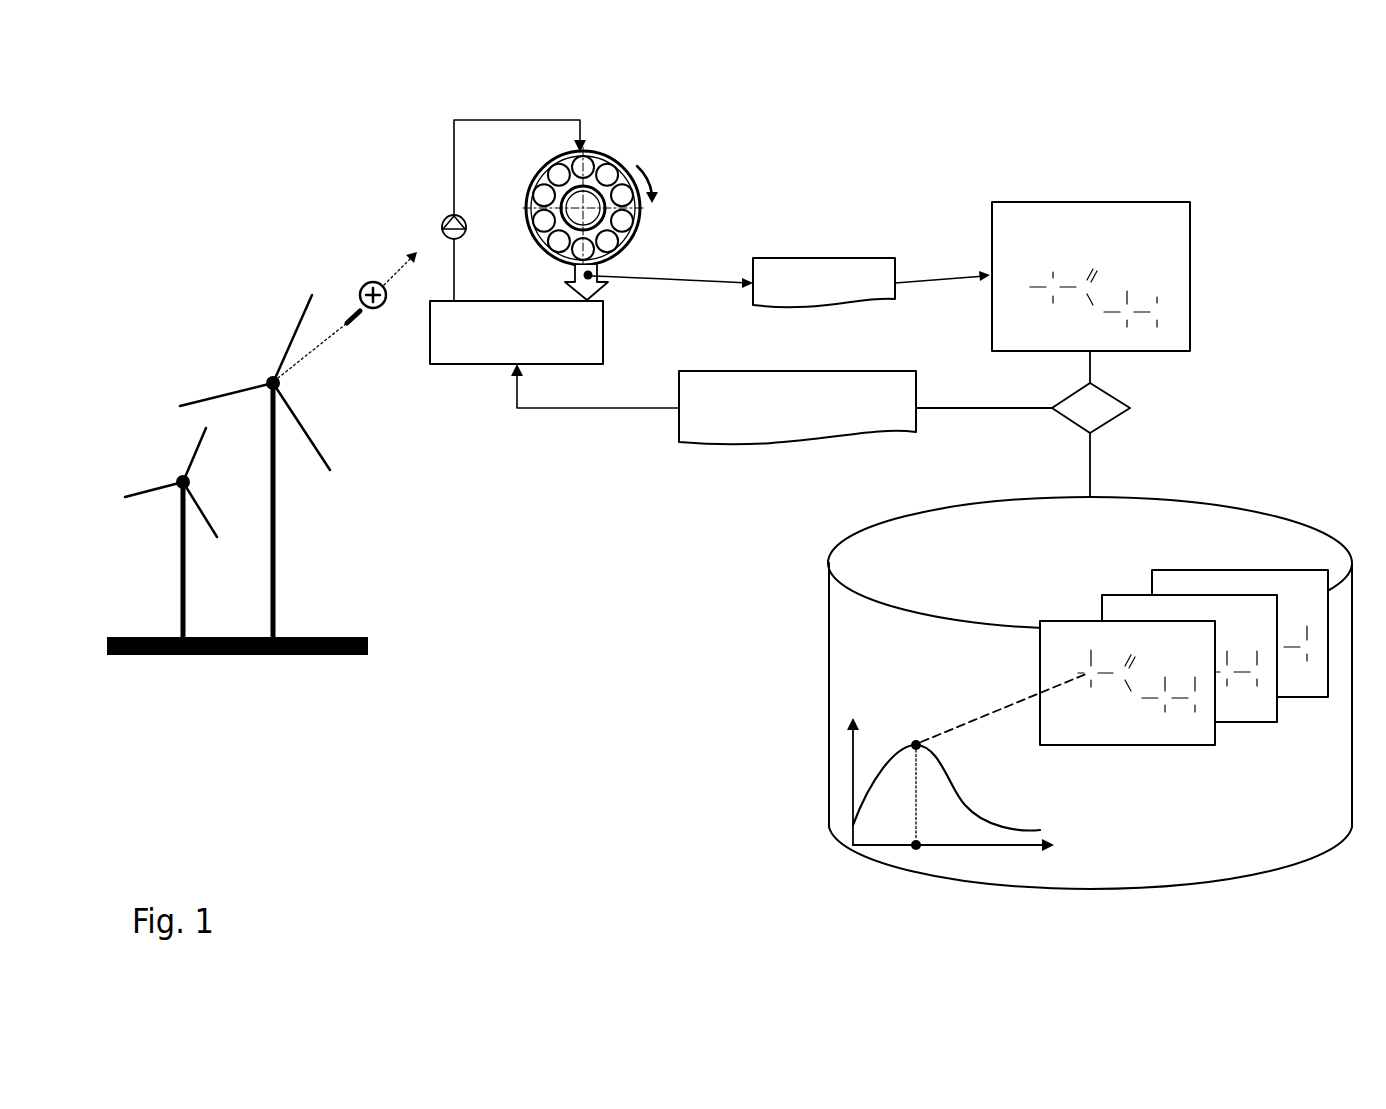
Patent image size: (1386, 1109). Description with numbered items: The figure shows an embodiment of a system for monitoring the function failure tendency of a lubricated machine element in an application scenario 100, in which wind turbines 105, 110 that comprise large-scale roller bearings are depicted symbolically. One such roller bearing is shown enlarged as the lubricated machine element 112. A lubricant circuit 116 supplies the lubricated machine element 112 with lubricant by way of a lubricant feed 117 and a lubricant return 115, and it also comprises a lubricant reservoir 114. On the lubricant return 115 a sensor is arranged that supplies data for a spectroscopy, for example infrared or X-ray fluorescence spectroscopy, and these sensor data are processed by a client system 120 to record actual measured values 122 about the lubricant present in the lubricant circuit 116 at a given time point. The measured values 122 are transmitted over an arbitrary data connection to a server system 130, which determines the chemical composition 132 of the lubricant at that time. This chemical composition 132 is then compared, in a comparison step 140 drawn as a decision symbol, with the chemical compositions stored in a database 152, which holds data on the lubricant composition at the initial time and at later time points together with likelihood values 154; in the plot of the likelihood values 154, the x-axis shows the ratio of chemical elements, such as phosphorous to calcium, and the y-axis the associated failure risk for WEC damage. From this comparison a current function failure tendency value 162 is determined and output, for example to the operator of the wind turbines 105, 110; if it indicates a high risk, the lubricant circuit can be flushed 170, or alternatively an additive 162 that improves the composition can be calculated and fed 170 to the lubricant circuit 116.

The application scenario 100 is at (580, 815).
The wind turbine 105 is at (183, 557).
The wind turbine 110 is at (273, 535).
The lubricated machine element 112 is at (618, 163).
The lubricant reservoir 114 is at (478, 335).
The lubricant return 115 is at (598, 272).
The lubricant circuit 116 is at (442, 224).
The lubricant feed 117 is at (576, 150).
The client system 120 is at (584, 274).
The measured values 122 is at (825, 258).
The server system 130 is at (1090, 202).
The chemical composition 132 is at (1128, 262).
The comparison unit 140 is at (1105, 410).
The database 152 is at (829, 633).
The likelihood values 154 is at (853, 795).
The function failure tendency value 162 is at (795, 443).
The flushing/feeding of the lubricant circuit 170 is at (522, 371).